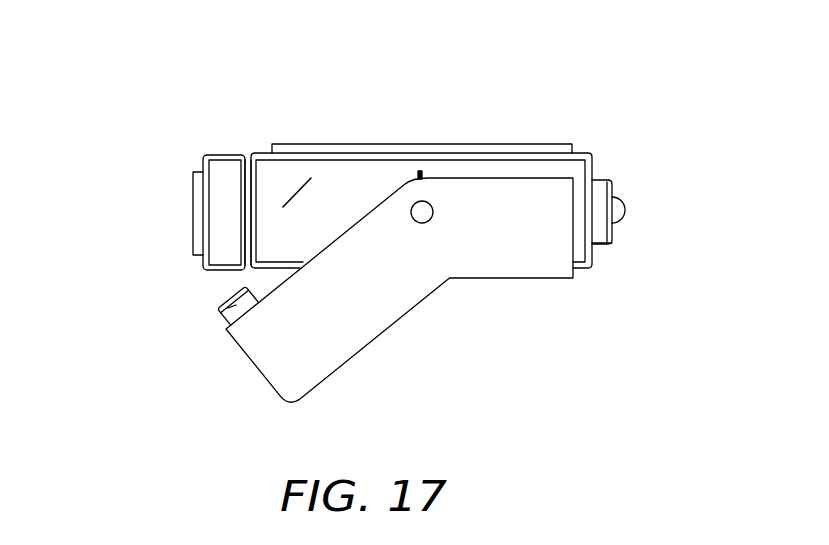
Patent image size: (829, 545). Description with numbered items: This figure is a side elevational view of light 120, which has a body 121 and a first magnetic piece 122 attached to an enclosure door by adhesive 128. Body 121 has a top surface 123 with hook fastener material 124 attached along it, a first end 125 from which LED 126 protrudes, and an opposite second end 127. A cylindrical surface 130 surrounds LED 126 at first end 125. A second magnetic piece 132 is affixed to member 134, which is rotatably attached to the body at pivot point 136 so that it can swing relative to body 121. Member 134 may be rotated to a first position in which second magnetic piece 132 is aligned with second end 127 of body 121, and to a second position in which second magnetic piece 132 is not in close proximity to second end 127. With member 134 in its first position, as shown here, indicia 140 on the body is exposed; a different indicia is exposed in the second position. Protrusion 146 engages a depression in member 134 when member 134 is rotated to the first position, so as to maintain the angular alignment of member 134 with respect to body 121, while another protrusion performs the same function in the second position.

The light 120 is at (641, 74).
The body 121 is at (531, 172).
The first magnetic piece 122 is at (223, 172).
The top surface 123 is at (256, 156).
The hook fastener material 124 is at (347, 148).
The first end 125 is at (593, 170).
The LED 126 is at (624, 207).
The second end 127 is at (253, 155).
The adhesive 128 is at (197, 198).
The cylindrical surface 130 is at (597, 237).
The second magnetic piece 132 is at (226, 329).
The member 134 is at (348, 338).
The pivot point 136 is at (426, 222).
The indicia 140 is at (295, 173).
The protrusion 146 is at (421, 171).